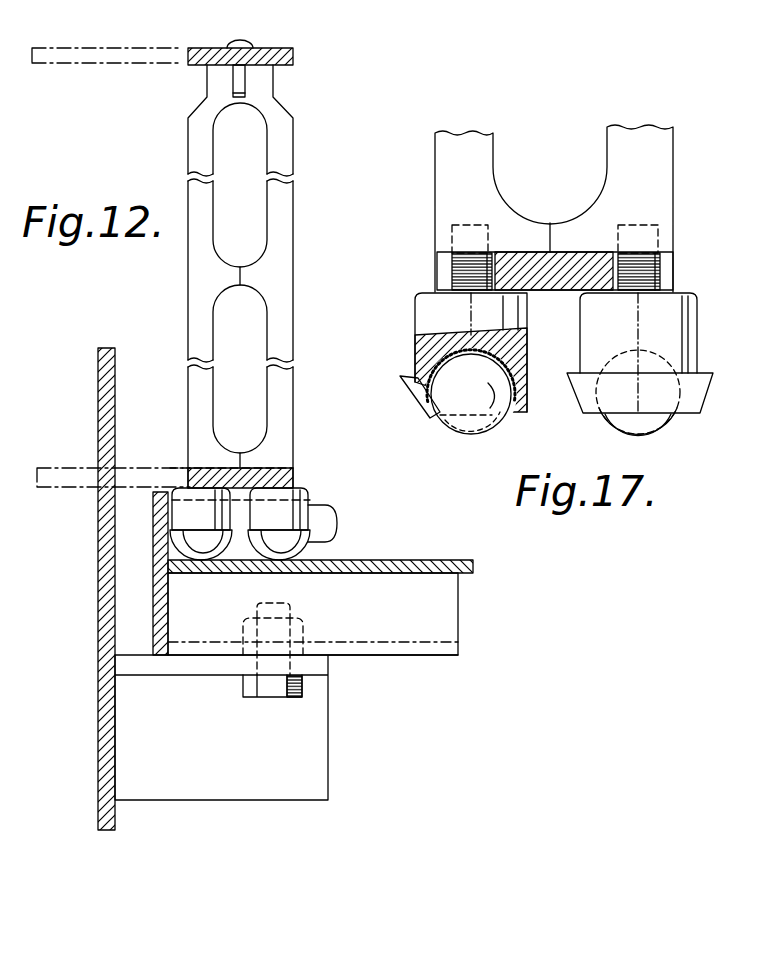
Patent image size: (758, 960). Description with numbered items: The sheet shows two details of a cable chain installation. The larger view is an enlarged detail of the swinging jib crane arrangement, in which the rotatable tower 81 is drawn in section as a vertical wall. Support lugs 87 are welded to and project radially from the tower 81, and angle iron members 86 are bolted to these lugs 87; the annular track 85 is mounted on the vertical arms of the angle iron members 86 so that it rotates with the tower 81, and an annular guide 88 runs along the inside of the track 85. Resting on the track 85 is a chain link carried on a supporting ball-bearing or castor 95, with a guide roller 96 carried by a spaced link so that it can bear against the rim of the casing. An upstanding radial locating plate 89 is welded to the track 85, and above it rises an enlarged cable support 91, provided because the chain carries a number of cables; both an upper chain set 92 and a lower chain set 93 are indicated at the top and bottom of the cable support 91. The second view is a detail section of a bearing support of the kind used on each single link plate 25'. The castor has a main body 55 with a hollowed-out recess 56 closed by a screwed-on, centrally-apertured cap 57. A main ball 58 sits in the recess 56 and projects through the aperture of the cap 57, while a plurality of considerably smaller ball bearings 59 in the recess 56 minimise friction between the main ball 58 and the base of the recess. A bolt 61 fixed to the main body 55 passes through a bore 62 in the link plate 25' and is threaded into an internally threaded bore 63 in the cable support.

In FIG. 12, the upper chain set 92 is at (221, 42).
In FIG. 12, the lower chain set 93 is at (148, 462).
In FIG. 12, the enlarged cable support 91 is at (277, 273).
In FIG. 12, the upstanding radial locating plate 89 is at (305, 500).
In FIG. 12, the supporting ball-bearing or castor 95 is at (310, 524).
In FIG. 12, the guide roller 96 is at (327, 511).
In FIG. 12, the annular track 85 is at (359, 562).
In FIG. 12, the angle iron member 86 is at (447, 612).
In FIG. 12, the support lug 87 is at (310, 712).
In FIG. 12, the annular guide 88 is at (153, 578).
In FIG. 12, the rotatable tower 81 is at (107, 535).
In FIG. 17, the single link plate 25' is at (554, 208).
In FIG. 17, the bore 62 is at (457, 263).
In FIG. 17, the internally threaded bore 63 is at (458, 238).
In FIG. 17, the bolt 61 is at (643, 238).
In FIG. 17, the main body 55 is at (426, 342).
In FIG. 17, the smaller ball bearing 59 is at (513, 361).
In FIG. 17, the hollowed-out recess 56 is at (472, 358).
In FIG. 17, the main ball 58 is at (453, 420).
In FIG. 17, the centrally-apertured cap 57 is at (417, 402).